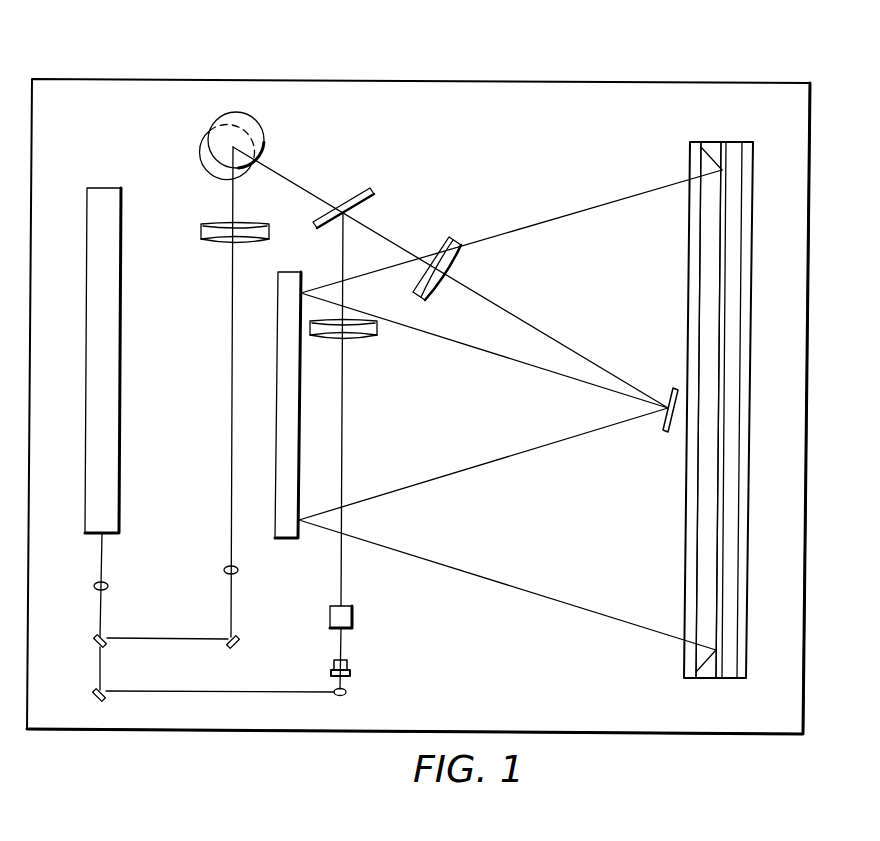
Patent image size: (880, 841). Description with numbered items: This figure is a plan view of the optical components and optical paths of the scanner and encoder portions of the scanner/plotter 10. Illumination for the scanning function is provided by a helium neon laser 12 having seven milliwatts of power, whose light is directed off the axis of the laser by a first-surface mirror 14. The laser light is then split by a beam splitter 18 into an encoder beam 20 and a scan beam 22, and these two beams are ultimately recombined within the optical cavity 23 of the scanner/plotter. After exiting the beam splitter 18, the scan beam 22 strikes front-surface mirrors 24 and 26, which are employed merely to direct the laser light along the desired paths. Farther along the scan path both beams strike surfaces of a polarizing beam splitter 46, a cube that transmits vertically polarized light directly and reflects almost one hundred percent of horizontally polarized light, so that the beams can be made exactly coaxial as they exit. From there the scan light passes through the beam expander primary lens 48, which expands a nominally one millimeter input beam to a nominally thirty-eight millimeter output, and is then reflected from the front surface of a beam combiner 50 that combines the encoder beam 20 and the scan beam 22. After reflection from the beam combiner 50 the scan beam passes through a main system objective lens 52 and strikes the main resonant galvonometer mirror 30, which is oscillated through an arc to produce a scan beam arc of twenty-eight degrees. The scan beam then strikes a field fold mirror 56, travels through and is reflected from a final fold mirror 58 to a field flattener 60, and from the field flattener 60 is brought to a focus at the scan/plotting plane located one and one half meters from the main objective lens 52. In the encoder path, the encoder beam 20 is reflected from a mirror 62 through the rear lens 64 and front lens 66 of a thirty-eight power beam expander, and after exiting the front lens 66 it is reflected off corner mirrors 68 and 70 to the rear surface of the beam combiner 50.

The optical apparatus 10 is at (418, 375).
The helium neon laser 12 is at (118, 487).
The first-surface mirror 14 is at (112, 586).
The beam splitter 18 is at (94, 643).
The encoder beam 20 is at (147, 637).
The scan beam 22 is at (99, 662).
The optical cavity 23 is at (693, 83).
The front-surface mirror 24 is at (97, 700).
The front-surface mirror 26 is at (345, 695).
The main resonant galvonometer mirror 30 is at (665, 431).
The polarizing beam splitter 46 is at (352, 628).
The beam expander primary lens 48 is at (362, 338).
The beam combiner 50 is at (373, 192).
The main system objective lens 52 is at (447, 238).
The field fold mirror 56 is at (296, 540).
The final fold mirror 58 is at (737, 142).
The field flattener 60 is at (715, 142).
The mirror 62 is at (240, 645).
The rear lens 64 is at (225, 568).
The front lens 66 is at (203, 235).
The corner mirror 68 is at (264, 152).
The corner mirror 70 is at (255, 118).